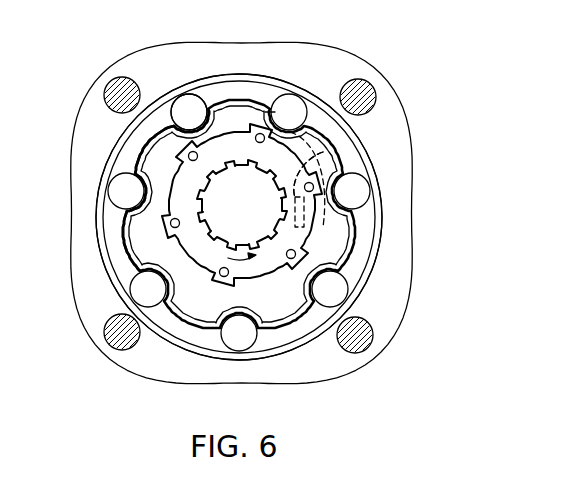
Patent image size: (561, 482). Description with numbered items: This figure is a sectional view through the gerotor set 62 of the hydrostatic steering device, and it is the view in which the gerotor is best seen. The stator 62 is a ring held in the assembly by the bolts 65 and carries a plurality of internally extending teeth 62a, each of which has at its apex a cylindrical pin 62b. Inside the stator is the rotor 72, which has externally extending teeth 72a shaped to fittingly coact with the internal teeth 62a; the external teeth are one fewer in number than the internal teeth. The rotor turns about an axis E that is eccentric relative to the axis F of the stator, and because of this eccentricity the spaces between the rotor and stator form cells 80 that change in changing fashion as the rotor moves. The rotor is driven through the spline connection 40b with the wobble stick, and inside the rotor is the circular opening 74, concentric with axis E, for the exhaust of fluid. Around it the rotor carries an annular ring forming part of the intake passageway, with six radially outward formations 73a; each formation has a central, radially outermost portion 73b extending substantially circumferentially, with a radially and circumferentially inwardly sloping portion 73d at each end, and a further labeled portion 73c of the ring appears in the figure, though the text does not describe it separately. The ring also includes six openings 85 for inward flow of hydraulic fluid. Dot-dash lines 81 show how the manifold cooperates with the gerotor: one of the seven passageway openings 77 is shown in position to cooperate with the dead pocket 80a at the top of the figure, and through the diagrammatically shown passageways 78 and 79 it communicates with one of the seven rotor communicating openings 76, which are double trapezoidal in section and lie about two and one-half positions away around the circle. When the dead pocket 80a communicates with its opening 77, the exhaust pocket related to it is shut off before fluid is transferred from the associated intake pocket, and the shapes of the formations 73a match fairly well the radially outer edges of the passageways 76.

The spline connection 40b is at (133, 360).
The gerotor set 62 is at (140, 350).
The internally extending teeth 62a is at (375, 188).
The cylindrical pin 62b is at (135, 70).
The bolts 65 is at (368, 48).
The rotor 72 is at (130, 258).
The externally extending teeth 72a is at (162, 157).
The radially outward openings 73a is at (177, 108).
The radially outermost portion 73b is at (125, 157).
The stator lobe surface 73c is at (160, 157).
The inwardly sloping portion 73d is at (232, 208).
The circular opening 74 is at (130, 208).
The rotor communicating openings 76 is at (290, 223).
The passageway openings 77 is at (250, 100).
The passageway 78 is at (290, 158).
The passageway 79 is at (290, 158).
The cells 80 is at (345, 237).
The dead pocket 80a is at (217, 70).
The dot-dash lines 81 is at (290, 132).
The openings 85 is at (270, 110).
The rotor axis E is at (190, 233).
The stator axis F is at (146, 435).